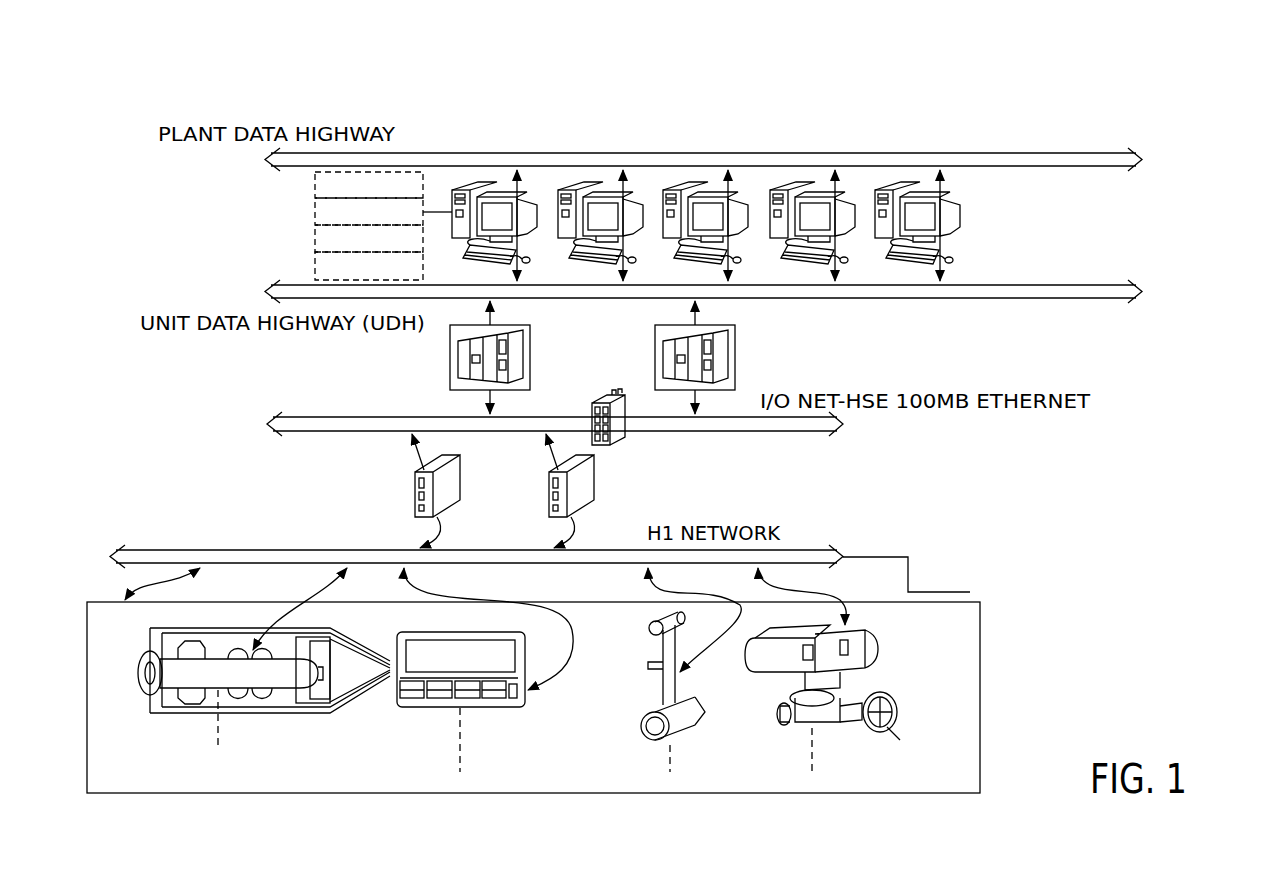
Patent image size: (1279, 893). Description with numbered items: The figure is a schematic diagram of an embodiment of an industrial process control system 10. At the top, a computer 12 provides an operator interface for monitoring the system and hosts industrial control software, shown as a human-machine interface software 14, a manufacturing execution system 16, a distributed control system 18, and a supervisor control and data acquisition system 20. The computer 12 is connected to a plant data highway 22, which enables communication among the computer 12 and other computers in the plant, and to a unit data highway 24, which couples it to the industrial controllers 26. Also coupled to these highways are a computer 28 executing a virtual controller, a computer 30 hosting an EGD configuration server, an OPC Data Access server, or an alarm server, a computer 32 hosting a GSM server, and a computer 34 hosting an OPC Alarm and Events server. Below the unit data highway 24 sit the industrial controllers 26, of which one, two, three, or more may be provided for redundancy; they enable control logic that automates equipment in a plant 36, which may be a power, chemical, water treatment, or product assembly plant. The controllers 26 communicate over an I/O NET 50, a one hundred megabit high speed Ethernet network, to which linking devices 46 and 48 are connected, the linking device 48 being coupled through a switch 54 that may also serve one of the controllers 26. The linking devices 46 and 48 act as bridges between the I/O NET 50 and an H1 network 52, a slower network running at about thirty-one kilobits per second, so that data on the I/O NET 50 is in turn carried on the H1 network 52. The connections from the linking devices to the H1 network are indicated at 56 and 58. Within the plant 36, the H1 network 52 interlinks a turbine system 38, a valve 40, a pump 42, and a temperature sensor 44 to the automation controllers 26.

The industrial process control system 10 is at (1192, 93).
The computer 12 is at (467, 190).
The human-machine interface (HMI) software 14 is at (315, 190).
The manufacturing execution system (MES) 16 is at (315, 217).
The distributed control system (DCS) 18 is at (315, 244).
The supervisor control and data acquisition (SCADA) system 20 is at (315, 270).
The plant data highway 22 is at (1138, 153).
The unit data highway 24 is at (1138, 286).
The industrial controller 26 is at (532, 357).
The computer 28 is at (573, 190).
The computer 30 is at (678, 190).
The computer 32 is at (783, 190).
The computer 34 is at (888, 190).
The plant 36 is at (312, 795).
The turbine system 38 is at (292, 722).
The valve 40 is at (683, 730).
The pump 42 is at (895, 720).
The temperature sensor 44 is at (490, 707).
The linking device 46 is at (453, 486).
The linking device 48 is at (587, 486).
The I/O NET 50 is at (845, 430).
The H1 network 52 is at (845, 550).
The switch 54 is at (615, 446).
The linking device connection 56 is at (410, 518).
The linking device connection 58 is at (545, 518).